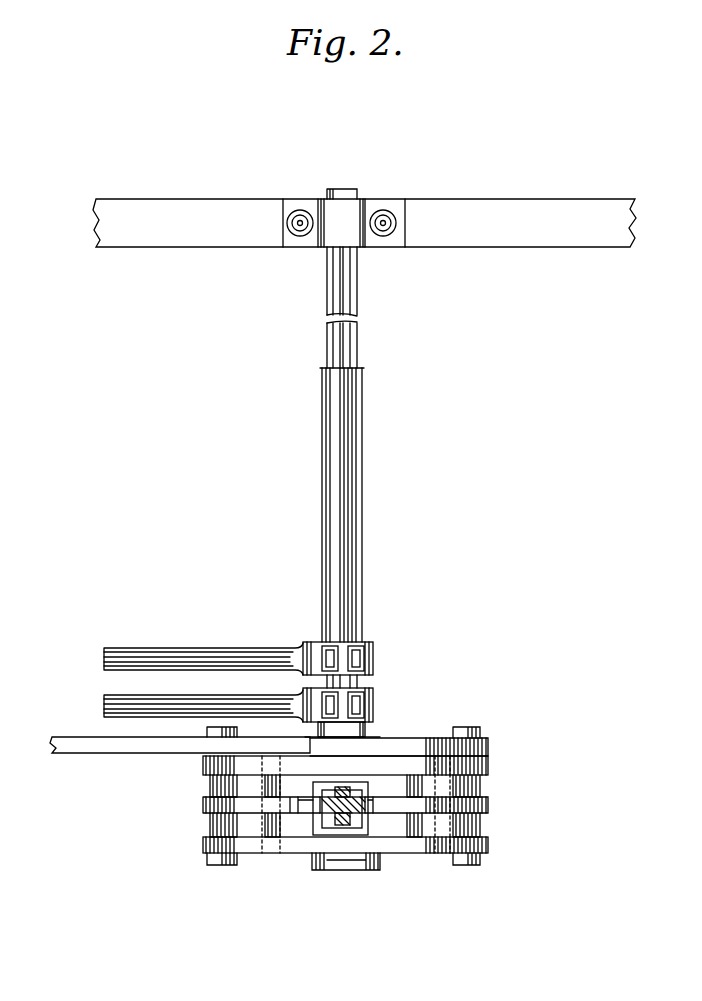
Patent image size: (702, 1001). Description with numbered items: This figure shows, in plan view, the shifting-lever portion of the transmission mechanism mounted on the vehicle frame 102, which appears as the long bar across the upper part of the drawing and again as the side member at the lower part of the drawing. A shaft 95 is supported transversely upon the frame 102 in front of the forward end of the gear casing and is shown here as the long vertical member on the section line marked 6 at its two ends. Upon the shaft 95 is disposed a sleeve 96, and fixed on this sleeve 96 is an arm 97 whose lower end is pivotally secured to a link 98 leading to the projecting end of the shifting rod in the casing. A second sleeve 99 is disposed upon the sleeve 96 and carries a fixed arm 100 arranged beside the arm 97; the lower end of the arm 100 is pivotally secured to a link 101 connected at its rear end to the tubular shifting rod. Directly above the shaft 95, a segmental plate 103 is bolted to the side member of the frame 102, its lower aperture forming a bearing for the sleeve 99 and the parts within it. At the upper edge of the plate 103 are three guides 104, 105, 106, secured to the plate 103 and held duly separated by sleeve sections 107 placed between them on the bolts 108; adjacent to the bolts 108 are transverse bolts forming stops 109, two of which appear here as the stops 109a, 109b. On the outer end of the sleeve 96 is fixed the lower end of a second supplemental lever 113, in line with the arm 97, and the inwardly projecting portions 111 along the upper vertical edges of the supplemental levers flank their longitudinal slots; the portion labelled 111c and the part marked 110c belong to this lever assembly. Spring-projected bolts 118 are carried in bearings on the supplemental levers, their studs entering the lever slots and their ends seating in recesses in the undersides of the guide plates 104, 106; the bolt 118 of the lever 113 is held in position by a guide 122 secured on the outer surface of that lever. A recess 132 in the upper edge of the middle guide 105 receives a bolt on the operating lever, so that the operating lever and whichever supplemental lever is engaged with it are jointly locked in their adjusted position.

The section line 6 is at (344, 190).
The shaft 95 is at (357, 343).
The sleeve 96 is at (362, 487).
The arm 97 is at (374, 642).
The link 98 is at (204, 647).
The second sleeve 99 is at (373, 680).
The arm 100 is at (373, 707).
The link 101 is at (216, 690).
The vehicle frame 102 is at (104, 770).
The segmental plate 103 is at (490, 755).
The guide 104 is at (490, 850).
The guide 105 is at (490, 806).
The guide 106 is at (490, 768).
The sleeve sections 107 is at (498, 828).
The bolts 108 is at (470, 866).
The stops 109 is at (428, 792).
The stop 109a is at (283, 783).
The stop 109b is at (275, 866).
The bearing block 110c is at (378, 776).
The inwardly projecting portions 111 is at (313, 824).
The bearing member 111c is at (353, 824).
The second supplemental lever 113 is at (370, 870).
The bolts 118 is at (334, 862).
The guide 122 is at (340, 858).
The recess 132 is at (282, 820).